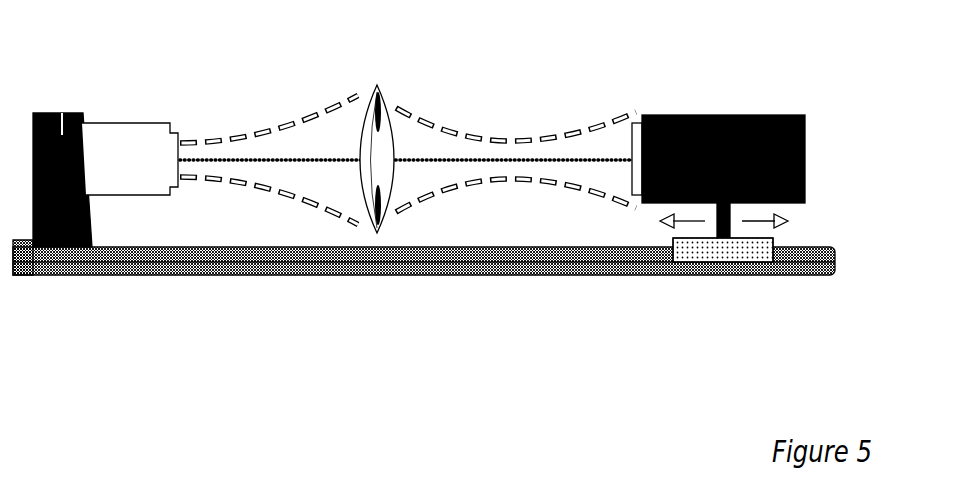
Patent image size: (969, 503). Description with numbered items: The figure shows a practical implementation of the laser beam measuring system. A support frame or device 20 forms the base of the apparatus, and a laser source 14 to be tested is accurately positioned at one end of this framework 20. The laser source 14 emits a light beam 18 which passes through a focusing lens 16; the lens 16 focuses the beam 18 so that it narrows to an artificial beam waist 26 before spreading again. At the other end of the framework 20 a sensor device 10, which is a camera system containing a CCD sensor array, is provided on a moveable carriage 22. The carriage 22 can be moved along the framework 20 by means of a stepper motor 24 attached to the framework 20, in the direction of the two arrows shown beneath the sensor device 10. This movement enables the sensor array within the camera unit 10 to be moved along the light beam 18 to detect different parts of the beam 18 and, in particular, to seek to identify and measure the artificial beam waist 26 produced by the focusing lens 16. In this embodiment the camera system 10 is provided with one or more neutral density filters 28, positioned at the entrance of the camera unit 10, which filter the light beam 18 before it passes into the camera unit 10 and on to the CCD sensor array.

The sensor device 10 is at (765, 127).
The laser source 14 is at (62, 113).
The focusing lens 16 is at (378, 85).
The light beam 18 is at (215, 139).
The support frame 20 is at (833, 248).
The moveable carriage 22 is at (724, 262).
The stepper motor 24 is at (23, 278).
The artificial beam waist 26 is at (511, 222).
The neutral density filter 28 is at (638, 118).